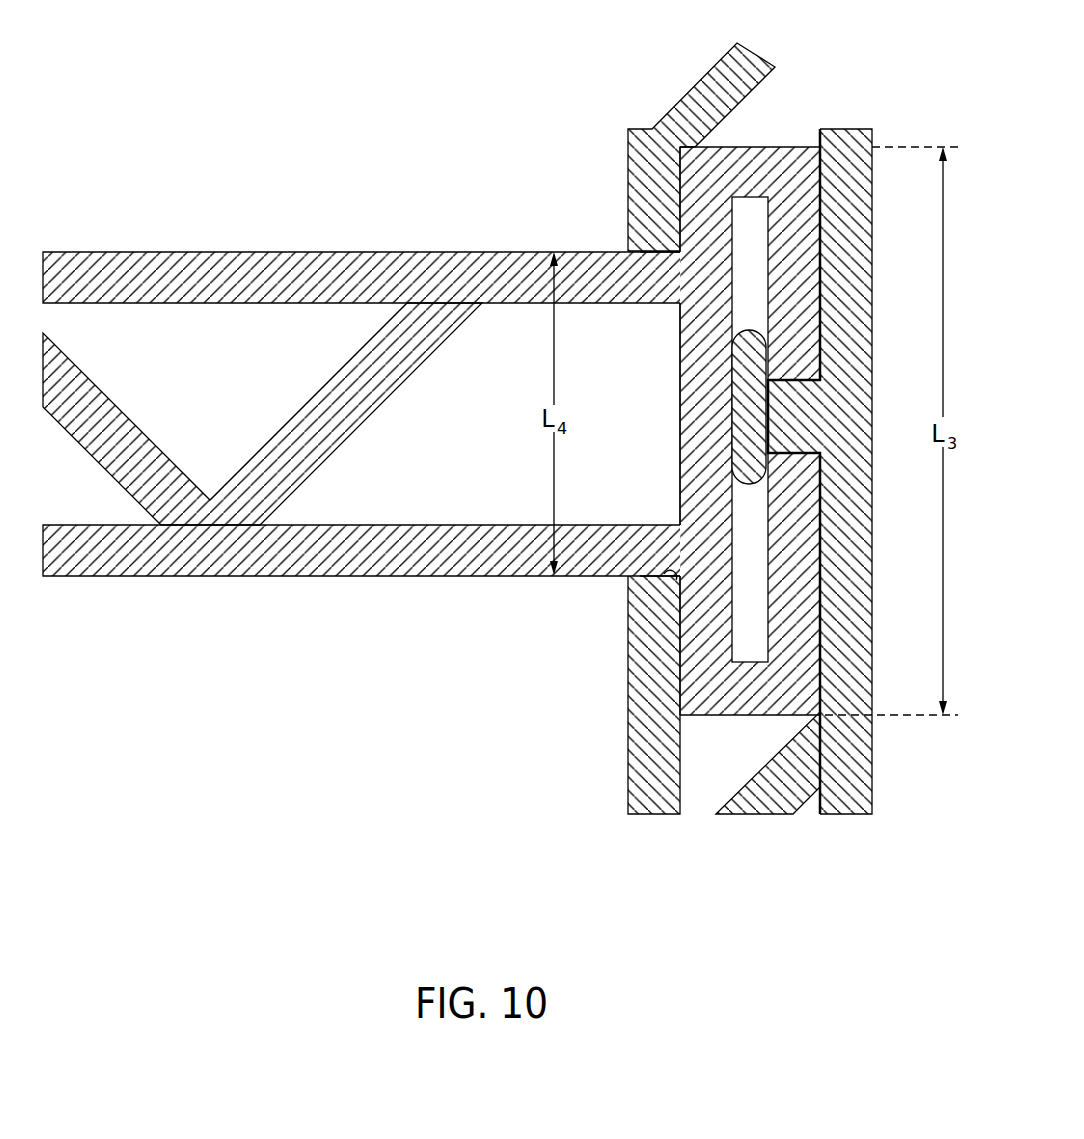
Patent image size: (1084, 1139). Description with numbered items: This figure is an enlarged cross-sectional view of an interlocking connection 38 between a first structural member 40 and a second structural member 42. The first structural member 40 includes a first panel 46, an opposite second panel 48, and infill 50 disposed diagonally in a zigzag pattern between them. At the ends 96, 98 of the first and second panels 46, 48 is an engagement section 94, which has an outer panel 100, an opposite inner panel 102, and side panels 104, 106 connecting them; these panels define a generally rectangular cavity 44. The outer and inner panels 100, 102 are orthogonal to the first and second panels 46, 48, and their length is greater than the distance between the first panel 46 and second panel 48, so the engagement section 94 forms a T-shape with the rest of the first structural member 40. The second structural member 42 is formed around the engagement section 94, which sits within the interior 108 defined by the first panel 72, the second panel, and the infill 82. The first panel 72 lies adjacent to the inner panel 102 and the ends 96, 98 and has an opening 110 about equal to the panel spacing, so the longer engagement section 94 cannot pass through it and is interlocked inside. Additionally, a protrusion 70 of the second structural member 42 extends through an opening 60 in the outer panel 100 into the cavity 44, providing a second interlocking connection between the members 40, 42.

The truss and bracket assembly 38 is at (168, 82).
The first structural member 40 is at (246, 224).
The second structural member 42 is at (885, 126).
The cavity 44 is at (748, 662).
The first panel 46 is at (365, 275).
The second panel 48 is at (388, 552).
The infill 50 is at (275, 440).
The opening 60 is at (783, 376).
The protrusion 70 is at (740, 332).
The first panel 72 is at (640, 685).
The infill 82 is at (700, 107).
The engagement section 94 is at (799, 122).
The end 96 is at (650, 278).
The end 98 is at (618, 576).
The outer panel 100 is at (800, 282).
The inner panel 102 is at (692, 422).
The side panel 104 is at (717, 167).
The side panel 106 is at (788, 699).
The interior 108 is at (716, 749).
The opening 110 is at (676, 580).